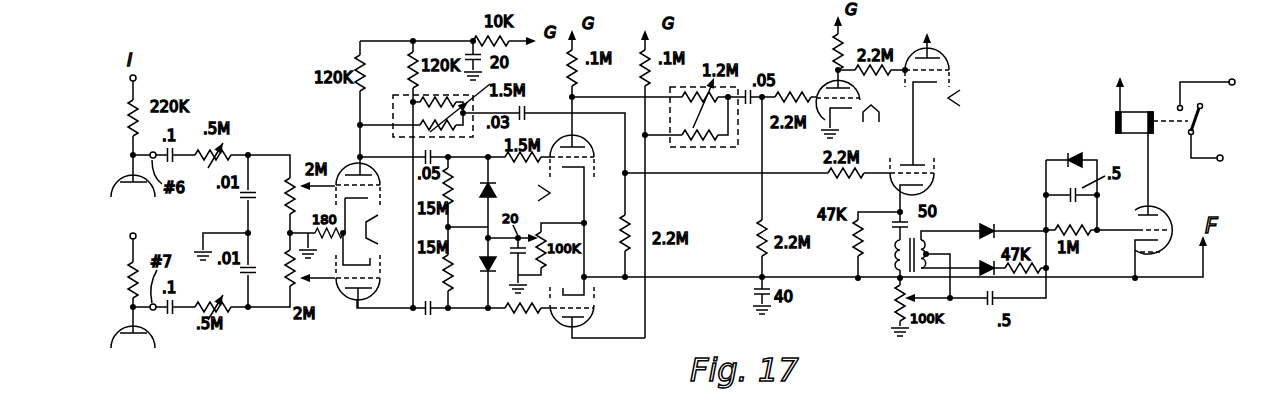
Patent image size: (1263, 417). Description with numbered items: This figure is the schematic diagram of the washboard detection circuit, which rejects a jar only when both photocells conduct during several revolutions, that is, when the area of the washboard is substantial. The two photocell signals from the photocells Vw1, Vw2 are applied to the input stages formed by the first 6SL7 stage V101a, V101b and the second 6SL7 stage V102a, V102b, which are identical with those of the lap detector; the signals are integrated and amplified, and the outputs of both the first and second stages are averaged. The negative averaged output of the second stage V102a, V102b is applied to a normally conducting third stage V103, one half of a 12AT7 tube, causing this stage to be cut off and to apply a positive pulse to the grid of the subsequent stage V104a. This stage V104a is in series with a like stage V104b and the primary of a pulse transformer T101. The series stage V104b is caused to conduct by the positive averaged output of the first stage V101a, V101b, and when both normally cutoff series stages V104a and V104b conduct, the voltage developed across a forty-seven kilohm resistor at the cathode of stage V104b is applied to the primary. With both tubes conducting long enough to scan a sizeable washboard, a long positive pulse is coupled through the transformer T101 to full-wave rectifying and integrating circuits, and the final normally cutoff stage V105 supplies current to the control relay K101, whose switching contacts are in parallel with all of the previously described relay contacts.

The washboard photocell Vw1 is at (122, 178).
The washboard photocell Vw2 is at (146, 350).
The first 6SL7 stage section V101a is at (350, 162).
The first 6SL7 stage section V101b is at (352, 304).
The second 6SL7 stage section V102a is at (596, 152).
The second 6SL7 stage section V102b is at (562, 322).
The third stage V103 is at (827, 78).
The series stage V104a is at (948, 52).
The series stage V104b is at (934, 172).
The final stage V105 is at (1160, 260).
The control relay K101 is at (1115, 118).
The pulse transformer T101 is at (897, 262).